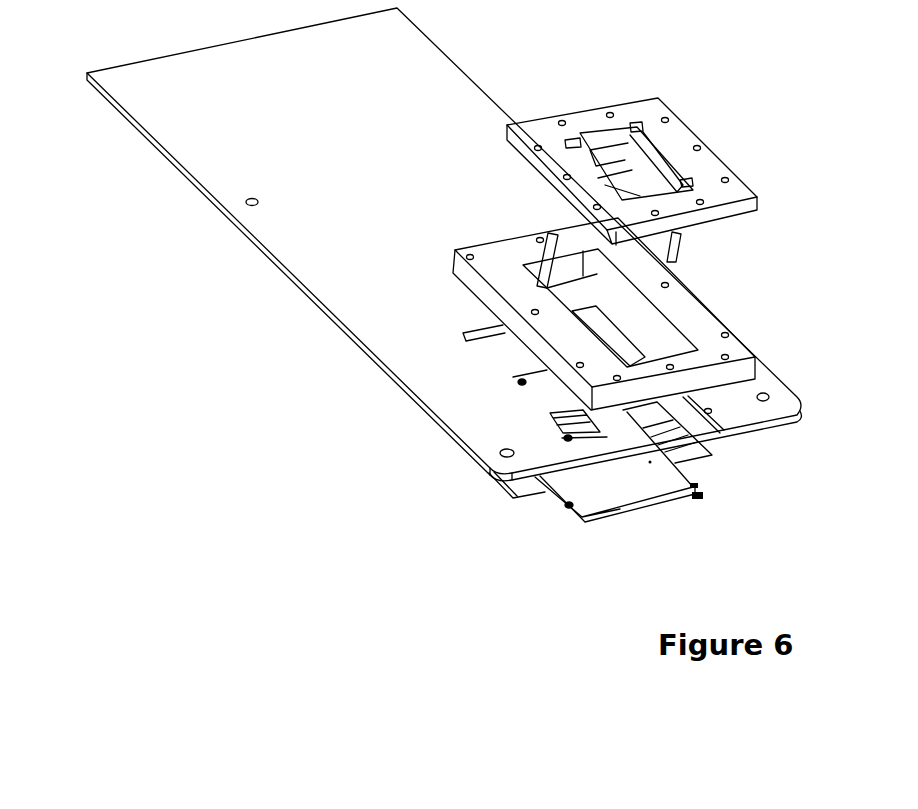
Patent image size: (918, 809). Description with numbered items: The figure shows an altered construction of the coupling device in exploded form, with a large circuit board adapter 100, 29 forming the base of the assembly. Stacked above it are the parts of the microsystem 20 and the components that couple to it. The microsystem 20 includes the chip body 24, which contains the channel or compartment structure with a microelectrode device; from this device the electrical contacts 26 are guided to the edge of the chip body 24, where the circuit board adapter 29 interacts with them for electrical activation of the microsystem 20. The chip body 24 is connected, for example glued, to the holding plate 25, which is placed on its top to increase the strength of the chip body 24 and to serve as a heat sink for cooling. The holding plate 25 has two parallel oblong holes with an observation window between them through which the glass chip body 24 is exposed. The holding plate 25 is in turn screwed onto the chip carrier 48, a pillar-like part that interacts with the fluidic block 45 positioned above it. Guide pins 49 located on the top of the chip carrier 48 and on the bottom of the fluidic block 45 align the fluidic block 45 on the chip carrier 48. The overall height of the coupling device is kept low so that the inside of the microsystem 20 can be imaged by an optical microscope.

The tray/carrier board 100 is at (444, 244).
The circuit board adapter 29 is at (272, 297).
The fluidic block 45 is at (535, 137).
The guide pins 49 is at (540, 260).
The chip carrier 48 is at (697, 315).
The holding plate 25 is at (623, 500).
The electrical contacts 26 is at (687, 450).
The chip body 24 is at (515, 502).
The microsystem 20 is at (741, 496).